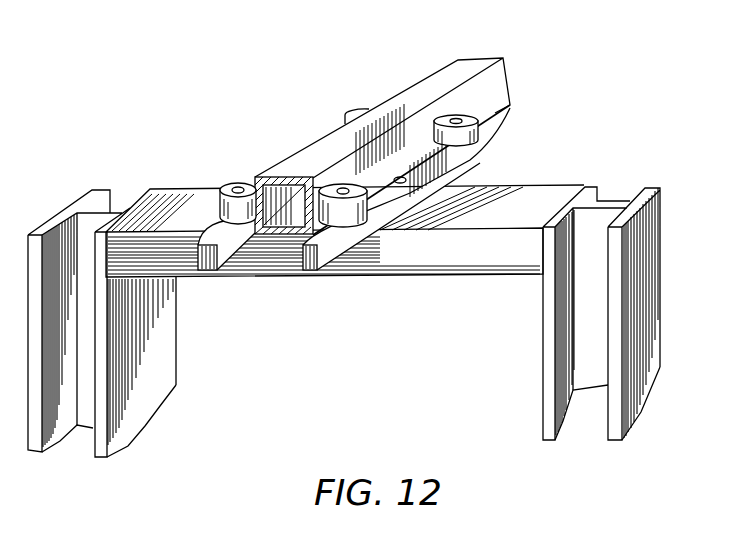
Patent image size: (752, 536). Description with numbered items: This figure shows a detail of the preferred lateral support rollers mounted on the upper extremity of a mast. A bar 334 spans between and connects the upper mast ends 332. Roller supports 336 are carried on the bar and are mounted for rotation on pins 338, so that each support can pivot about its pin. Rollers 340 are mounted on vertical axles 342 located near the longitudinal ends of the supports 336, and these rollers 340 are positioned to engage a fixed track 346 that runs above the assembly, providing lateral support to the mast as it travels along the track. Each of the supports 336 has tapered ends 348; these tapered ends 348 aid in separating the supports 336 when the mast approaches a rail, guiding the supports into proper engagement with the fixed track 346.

The upper mast ends 332 is at (138, 386).
The bar 334 is at (442, 262).
The roller supports 336 is at (364, 236).
The pins 338 is at (442, 187).
The rollers 340 is at (480, 129).
The vertical axles 342 is at (348, 110).
The fixed track 346 is at (416, 100).
The tapered ends 348 is at (217, 254).